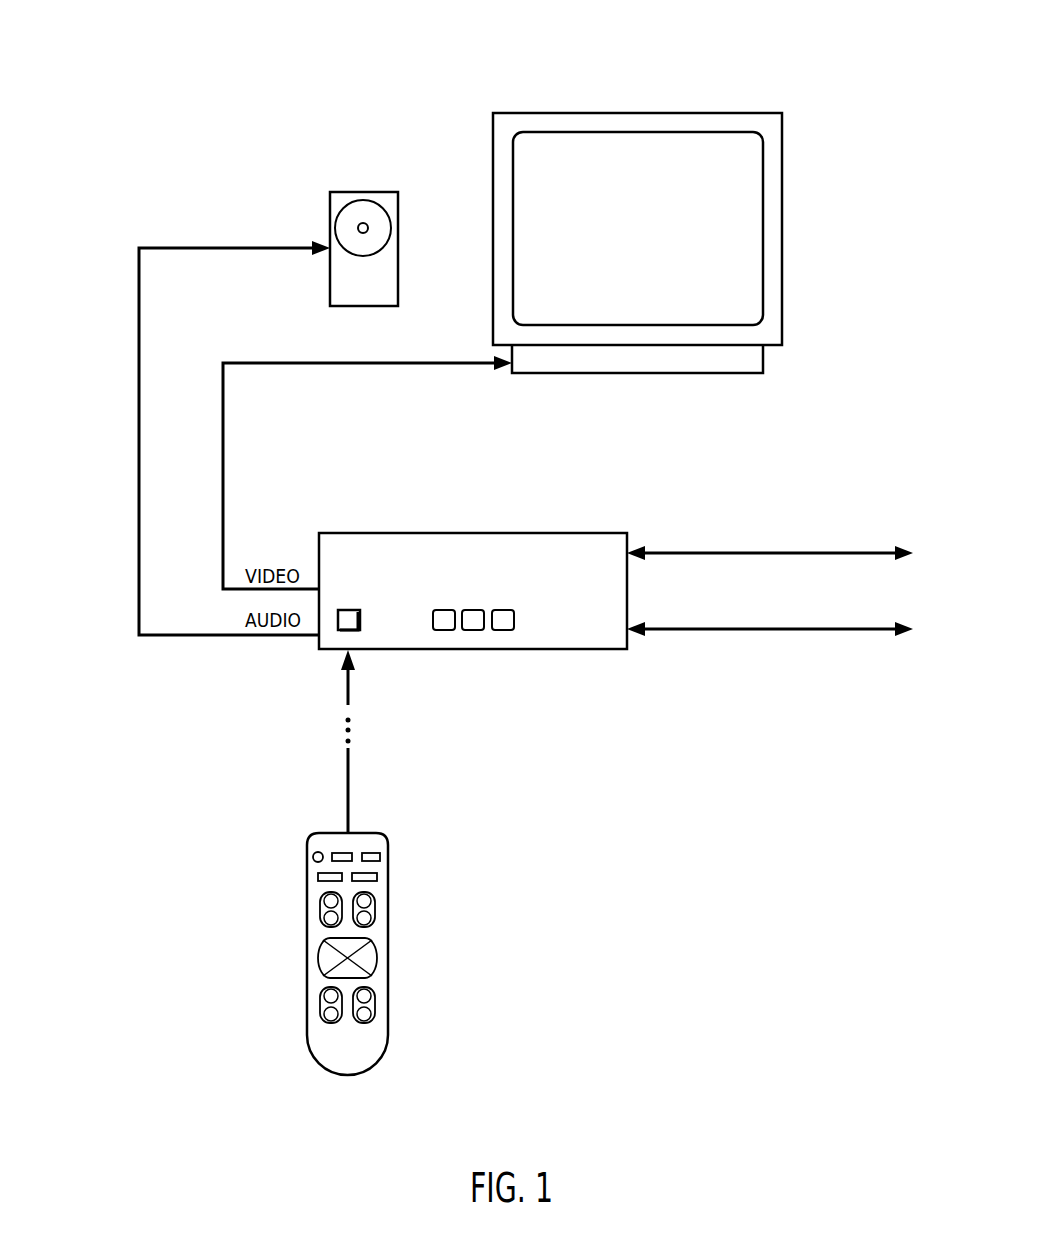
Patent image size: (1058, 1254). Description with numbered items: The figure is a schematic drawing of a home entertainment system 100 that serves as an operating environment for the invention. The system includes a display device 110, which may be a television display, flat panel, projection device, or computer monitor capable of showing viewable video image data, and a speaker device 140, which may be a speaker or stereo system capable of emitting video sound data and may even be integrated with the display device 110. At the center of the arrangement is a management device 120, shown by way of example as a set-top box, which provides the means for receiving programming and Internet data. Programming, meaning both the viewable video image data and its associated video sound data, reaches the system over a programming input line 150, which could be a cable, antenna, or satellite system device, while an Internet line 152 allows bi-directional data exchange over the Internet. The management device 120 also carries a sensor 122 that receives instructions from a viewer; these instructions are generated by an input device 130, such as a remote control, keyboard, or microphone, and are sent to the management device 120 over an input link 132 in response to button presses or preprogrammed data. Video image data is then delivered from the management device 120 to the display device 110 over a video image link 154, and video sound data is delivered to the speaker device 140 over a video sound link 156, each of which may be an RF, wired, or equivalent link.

The home entertainment system 100 is at (762, 60).
The display device 110 is at (752, 310).
The management device 120 is at (618, 638).
The sensor 122 is at (360, 617).
The input device 130 is at (362, 1065).
The input link 132 is at (346, 795).
The speaker device 140 is at (379, 292).
The programming input line 150 is at (675, 550).
The Internet line 152 is at (675, 627).
The video image link 154 is at (223, 455).
The video sound link 156 is at (139, 408).